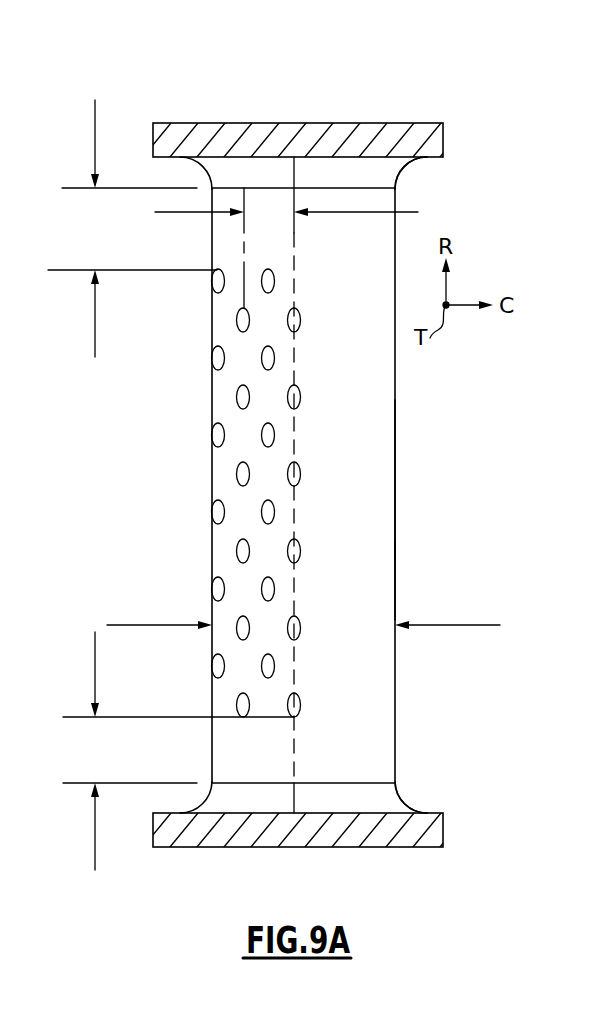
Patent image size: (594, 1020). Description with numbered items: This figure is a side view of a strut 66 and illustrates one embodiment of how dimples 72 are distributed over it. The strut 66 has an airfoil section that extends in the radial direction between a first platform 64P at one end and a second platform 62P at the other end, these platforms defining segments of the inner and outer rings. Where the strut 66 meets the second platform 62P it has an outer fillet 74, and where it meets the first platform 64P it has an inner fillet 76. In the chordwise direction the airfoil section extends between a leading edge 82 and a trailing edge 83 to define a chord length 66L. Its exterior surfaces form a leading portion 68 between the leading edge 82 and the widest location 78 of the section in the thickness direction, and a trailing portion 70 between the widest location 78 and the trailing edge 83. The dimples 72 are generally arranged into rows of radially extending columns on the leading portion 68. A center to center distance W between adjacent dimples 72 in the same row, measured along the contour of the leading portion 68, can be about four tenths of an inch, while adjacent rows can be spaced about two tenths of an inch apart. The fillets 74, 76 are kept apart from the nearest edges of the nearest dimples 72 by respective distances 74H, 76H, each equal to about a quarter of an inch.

The second platform 62P is at (238, 123).
The first platform 64P is at (421, 848).
The strut 66 is at (363, 402).
The chord length 66L is at (477, 624).
The leading portion 68 is at (222, 470).
The trailing portion 70 is at (370, 487).
The dimples 72 is at (236, 551).
The outer fillet 74 is at (403, 171).
The distance 74H is at (132, 228).
The inner fillet 76 is at (404, 807).
The distance 76H is at (178, 751).
The widest location 78 is at (295, 729).
The leading edge 82 is at (210, 455).
The trailing edge 83 is at (396, 575).
The center to center distance W is at (286, 212).